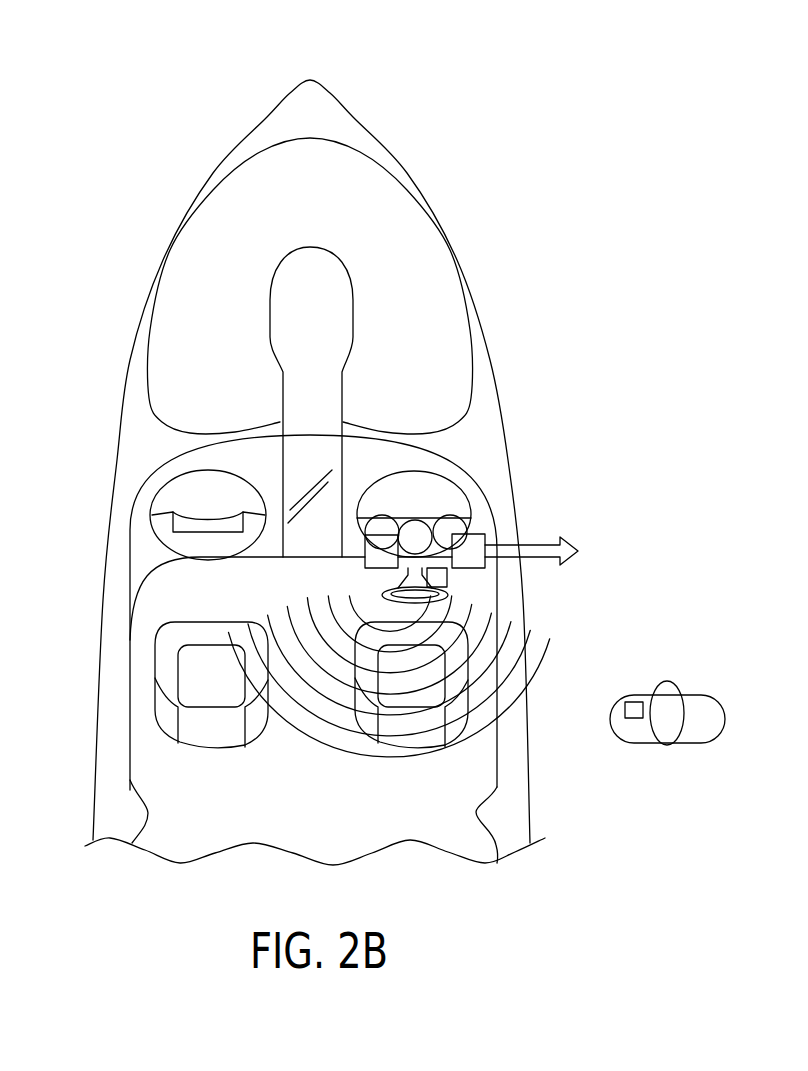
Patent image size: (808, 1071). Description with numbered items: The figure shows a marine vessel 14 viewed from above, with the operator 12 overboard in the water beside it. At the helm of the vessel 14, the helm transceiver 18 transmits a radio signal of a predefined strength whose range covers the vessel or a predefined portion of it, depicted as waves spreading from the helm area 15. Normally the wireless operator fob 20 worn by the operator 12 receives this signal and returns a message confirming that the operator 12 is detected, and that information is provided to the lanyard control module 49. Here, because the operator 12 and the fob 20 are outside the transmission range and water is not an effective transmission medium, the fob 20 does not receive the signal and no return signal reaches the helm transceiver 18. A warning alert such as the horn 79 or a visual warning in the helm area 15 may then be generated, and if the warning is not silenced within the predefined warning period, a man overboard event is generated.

The marine vessel 14 is at (455, 262).
The helm transceiver 18 is at (383, 535).
The lanyard control module 49 is at (612, 565).
The horn 79 is at (448, 581).
The helm area 15 is at (497, 637).
The wireless operator fob 20 is at (627, 703).
The operator 12 is at (703, 720).